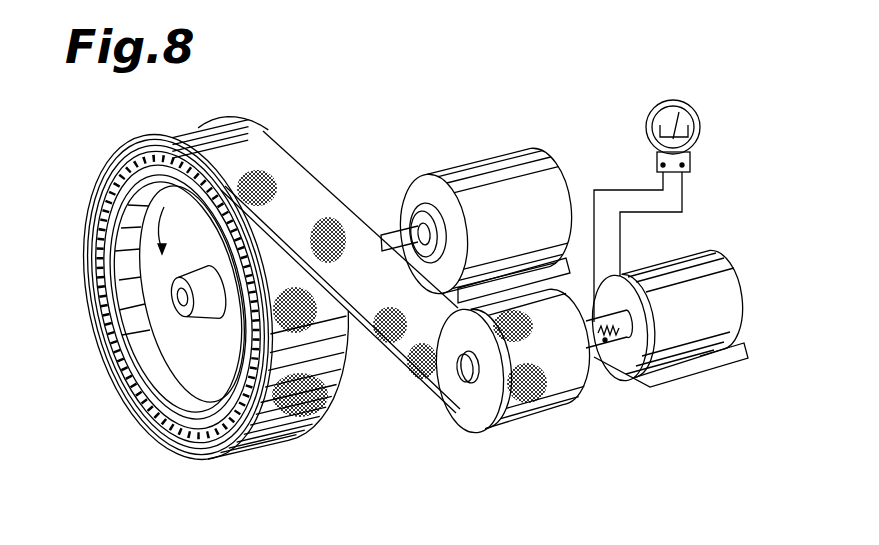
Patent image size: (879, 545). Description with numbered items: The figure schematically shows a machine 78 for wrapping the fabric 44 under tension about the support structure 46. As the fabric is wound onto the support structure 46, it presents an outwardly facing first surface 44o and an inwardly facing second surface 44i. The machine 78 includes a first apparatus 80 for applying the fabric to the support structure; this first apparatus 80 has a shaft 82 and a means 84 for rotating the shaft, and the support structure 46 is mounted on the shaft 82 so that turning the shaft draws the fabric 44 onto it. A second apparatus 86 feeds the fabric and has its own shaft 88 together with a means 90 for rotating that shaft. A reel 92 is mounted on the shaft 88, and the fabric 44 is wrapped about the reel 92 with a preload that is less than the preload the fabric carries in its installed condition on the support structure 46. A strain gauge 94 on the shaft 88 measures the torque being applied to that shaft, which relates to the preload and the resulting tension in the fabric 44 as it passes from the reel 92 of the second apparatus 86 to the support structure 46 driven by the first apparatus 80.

The fabric 44 is at (340, 249).
The outwardly facing first surface 44o is at (310, 294).
The inwardly facing second surface 44i is at (333, 297).
The support structure 46 is at (140, 266).
The machine 78 is at (558, 143).
The first apparatus 80 is at (187, 306).
The shaft 82 is at (382, 234).
The means for rotating the shaft 84 is at (522, 250).
The second apparatus 86 is at (507, 432).
The shaft 88 is at (607, 350).
The means for rotating the shaft 90 is at (710, 332).
The reel 92 is at (453, 388).
The strain gauge 94 is at (606, 342).